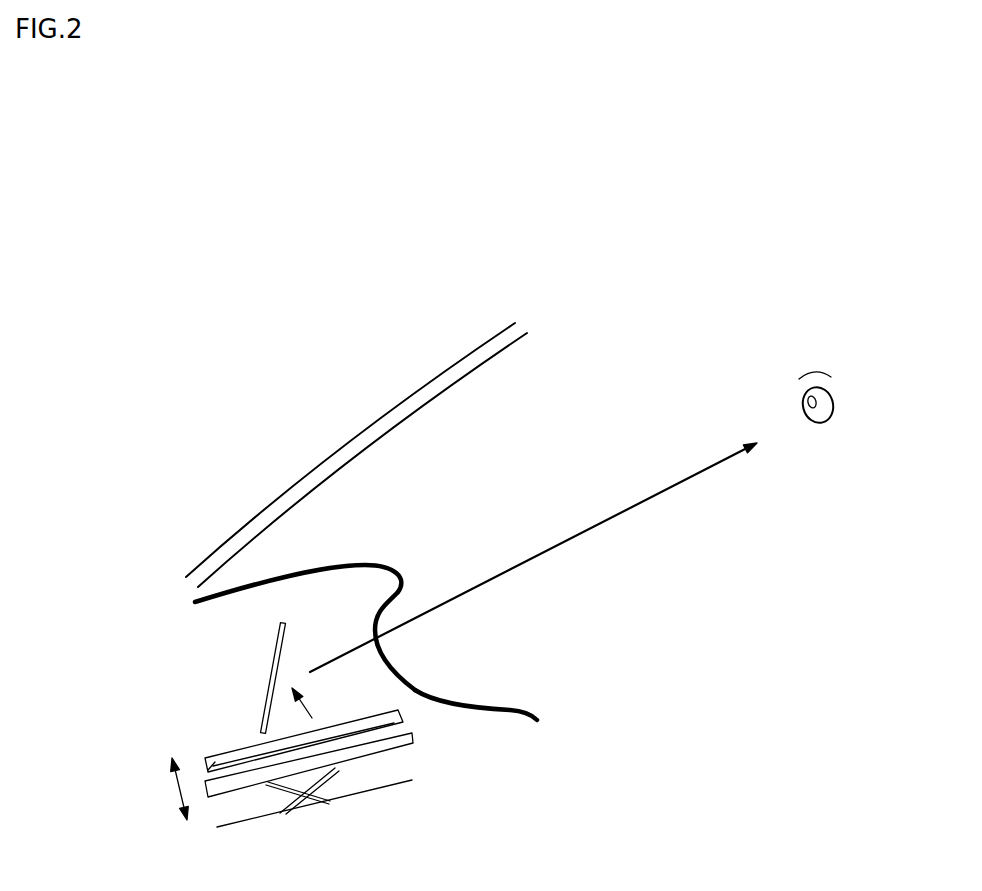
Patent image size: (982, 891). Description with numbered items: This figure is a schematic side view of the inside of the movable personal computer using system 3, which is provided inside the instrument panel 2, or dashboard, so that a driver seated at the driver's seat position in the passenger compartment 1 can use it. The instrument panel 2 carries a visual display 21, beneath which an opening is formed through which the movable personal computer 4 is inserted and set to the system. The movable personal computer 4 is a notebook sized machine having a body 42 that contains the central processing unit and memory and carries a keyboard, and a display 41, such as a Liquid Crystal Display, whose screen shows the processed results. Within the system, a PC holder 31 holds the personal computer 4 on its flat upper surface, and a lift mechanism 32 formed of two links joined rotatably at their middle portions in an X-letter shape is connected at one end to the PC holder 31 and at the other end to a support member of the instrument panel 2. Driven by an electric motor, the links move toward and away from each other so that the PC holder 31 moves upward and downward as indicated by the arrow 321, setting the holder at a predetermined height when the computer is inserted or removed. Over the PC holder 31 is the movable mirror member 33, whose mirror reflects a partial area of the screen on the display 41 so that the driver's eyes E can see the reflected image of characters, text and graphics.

The passenger compartment 1 is at (586, 402).
The instrument panel 2 is at (366, 589).
The visual display 21 is at (410, 602).
The movable personal computer using system 3 is at (308, 715).
The PC holder 31 is at (412, 738).
The lift mechanism 32 is at (352, 782).
The arrow 321 is at (170, 793).
The movable mirror member 33 is at (280, 643).
The movable personal computer 4 is at (244, 723).
The display 41 is at (263, 750).
The body 42 is at (207, 766).
The driver's eyes E is at (835, 440).